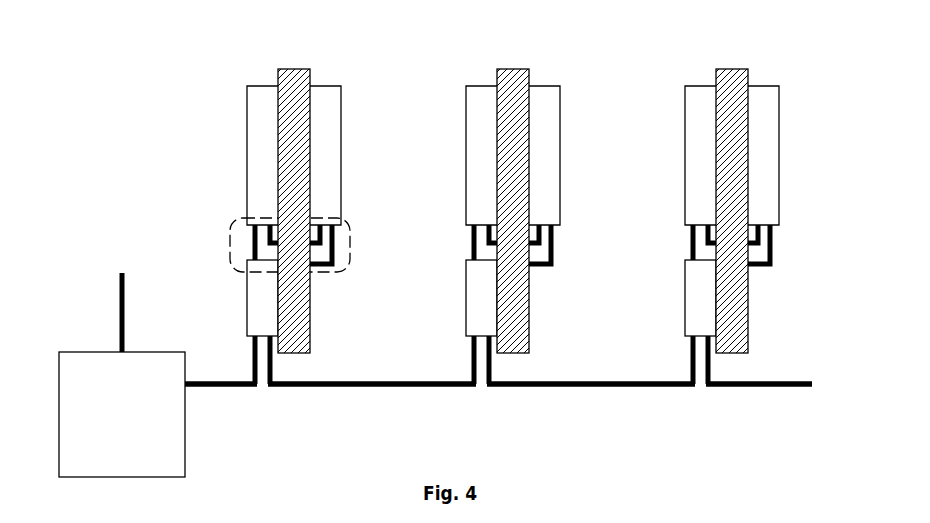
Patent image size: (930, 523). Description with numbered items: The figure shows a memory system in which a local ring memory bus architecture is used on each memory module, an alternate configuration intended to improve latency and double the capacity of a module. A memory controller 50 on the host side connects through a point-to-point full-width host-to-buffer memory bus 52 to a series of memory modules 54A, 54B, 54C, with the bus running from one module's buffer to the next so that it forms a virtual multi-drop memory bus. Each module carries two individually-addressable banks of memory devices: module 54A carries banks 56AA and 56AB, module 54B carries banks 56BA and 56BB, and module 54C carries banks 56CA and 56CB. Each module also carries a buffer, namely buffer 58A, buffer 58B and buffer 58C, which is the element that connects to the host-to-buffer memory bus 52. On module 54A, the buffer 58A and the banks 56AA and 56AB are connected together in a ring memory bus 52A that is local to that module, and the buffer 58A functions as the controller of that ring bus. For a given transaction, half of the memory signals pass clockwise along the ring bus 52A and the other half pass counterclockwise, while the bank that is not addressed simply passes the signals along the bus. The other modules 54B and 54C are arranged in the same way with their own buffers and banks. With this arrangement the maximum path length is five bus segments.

The memory controller 50 is at (110, 450).
The point-to-point full-width host-to-buffer memory bus 52 is at (621, 453).
The ring memory bus 52A is at (230, 242).
The memory module 54A is at (297, 69).
The memory module 54B is at (550, 185).
The memory module 54C is at (769, 185).
The bank of memory devices 56AA is at (247, 172).
The bank of memory devices 56AB is at (341, 117).
The bank of memory devices 56BA is at (437, 155).
The bank of memory devices 56BB is at (587, 154).
The bank of memory devices 56CA is at (656, 155).
The bank of memory devices 56CB is at (807, 154).
The buffer 58A is at (247, 322).
The buffer 58B is at (437, 322).
The buffer 58C is at (654, 322).